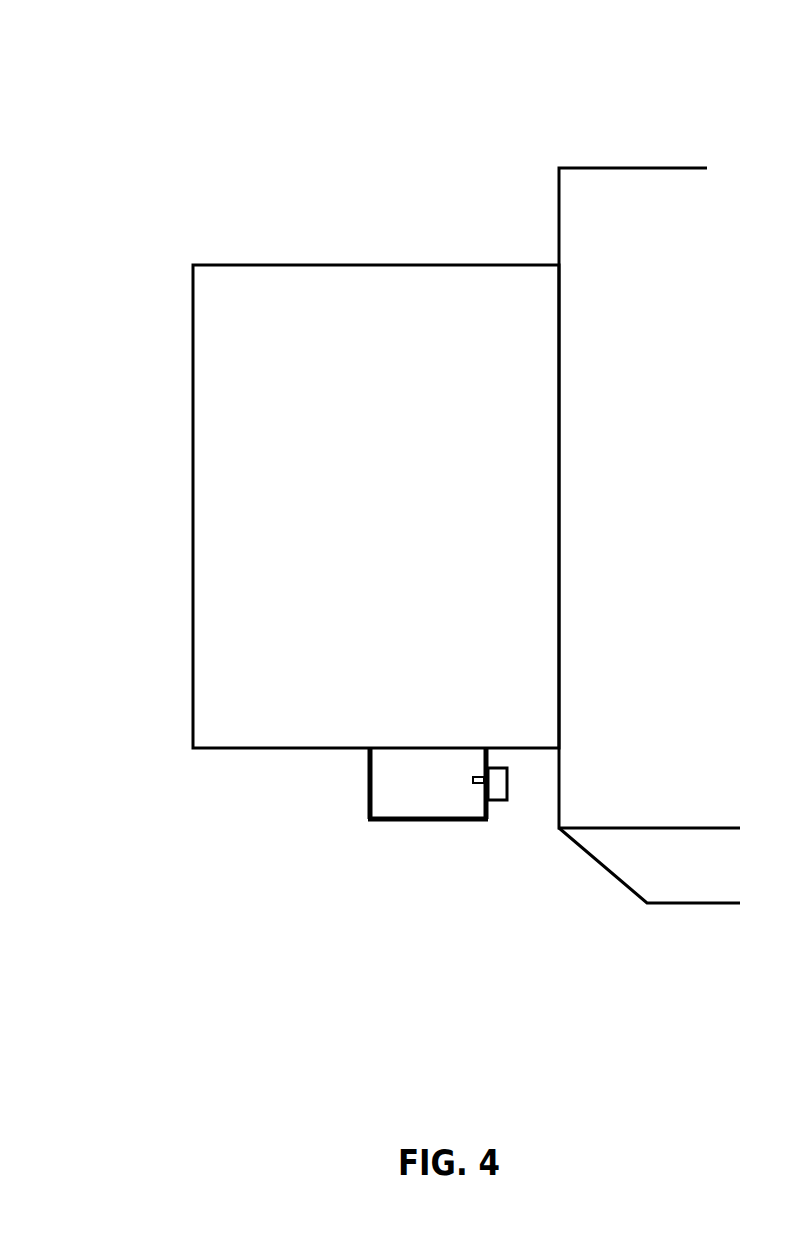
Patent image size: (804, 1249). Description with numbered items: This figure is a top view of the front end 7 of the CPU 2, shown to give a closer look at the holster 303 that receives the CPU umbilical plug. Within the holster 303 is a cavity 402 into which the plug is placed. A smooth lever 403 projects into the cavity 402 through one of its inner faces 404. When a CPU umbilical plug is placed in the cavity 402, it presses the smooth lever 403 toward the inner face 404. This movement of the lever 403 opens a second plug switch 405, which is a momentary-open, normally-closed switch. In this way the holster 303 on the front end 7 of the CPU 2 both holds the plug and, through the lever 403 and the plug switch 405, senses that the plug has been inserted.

The CPU 2 is at (648, 119).
The front end 7 is at (318, 390).
The holster 303 is at (398, 792).
The cavity 402 is at (390, 820).
The smooth lever 403 is at (474, 785).
The inner face 404 is at (480, 762).
The plug switch 405 is at (498, 777).